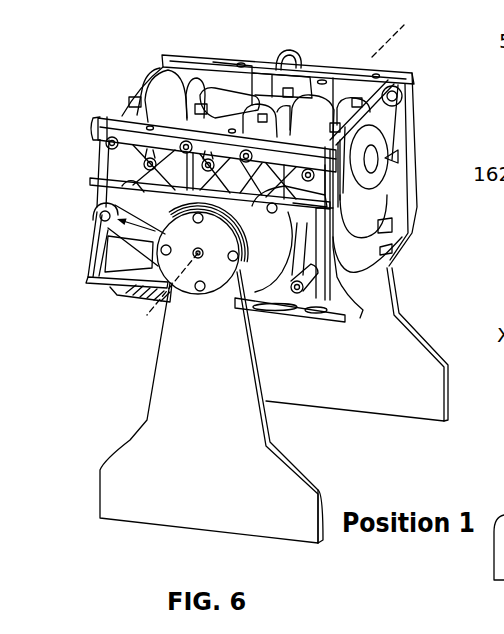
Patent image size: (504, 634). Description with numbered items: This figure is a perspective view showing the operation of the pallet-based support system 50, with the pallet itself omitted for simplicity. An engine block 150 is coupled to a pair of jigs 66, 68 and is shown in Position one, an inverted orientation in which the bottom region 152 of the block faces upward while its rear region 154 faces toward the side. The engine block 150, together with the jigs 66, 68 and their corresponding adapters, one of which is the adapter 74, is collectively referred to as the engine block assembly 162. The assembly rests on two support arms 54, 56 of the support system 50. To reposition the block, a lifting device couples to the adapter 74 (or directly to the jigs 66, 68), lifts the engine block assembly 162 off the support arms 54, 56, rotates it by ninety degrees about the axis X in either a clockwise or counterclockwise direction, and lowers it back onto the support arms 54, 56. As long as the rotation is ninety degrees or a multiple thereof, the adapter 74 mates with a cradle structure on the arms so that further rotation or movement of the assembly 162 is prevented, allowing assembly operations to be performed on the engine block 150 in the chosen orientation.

The pallet-based support system 50 is at (157, 50).
The support arm 54 is at (233, 520).
The support arm 56 is at (393, 404).
The jig 66 is at (135, 205).
The jig 68 is at (287, 63).
The adapter 74 is at (138, 294).
The engine block 150 is at (314, 56).
The bottom region 152 is at (389, 72).
The rear region 154 is at (418, 218).
The engine block assembly 162 is at (108, 98).
The axis X is at (183, 270).